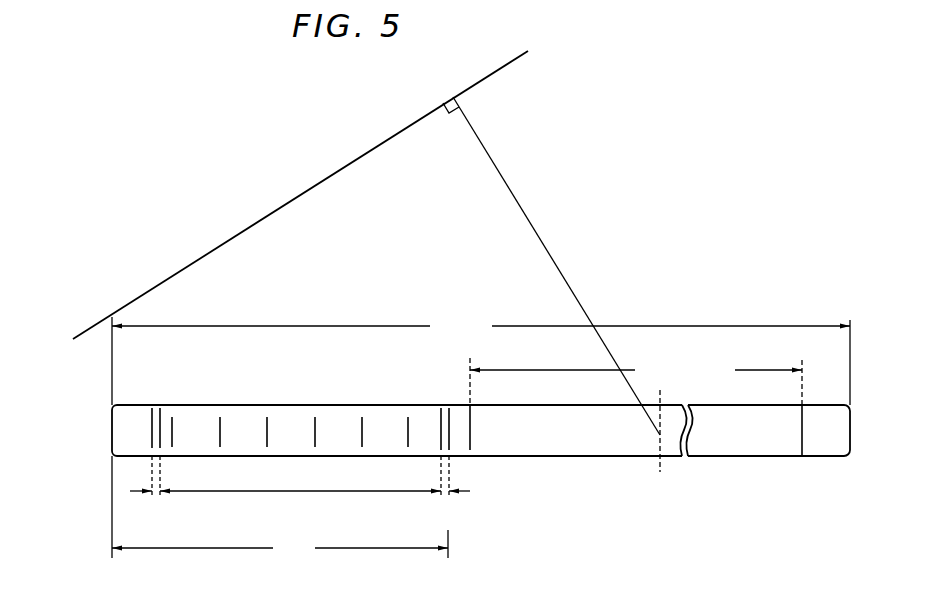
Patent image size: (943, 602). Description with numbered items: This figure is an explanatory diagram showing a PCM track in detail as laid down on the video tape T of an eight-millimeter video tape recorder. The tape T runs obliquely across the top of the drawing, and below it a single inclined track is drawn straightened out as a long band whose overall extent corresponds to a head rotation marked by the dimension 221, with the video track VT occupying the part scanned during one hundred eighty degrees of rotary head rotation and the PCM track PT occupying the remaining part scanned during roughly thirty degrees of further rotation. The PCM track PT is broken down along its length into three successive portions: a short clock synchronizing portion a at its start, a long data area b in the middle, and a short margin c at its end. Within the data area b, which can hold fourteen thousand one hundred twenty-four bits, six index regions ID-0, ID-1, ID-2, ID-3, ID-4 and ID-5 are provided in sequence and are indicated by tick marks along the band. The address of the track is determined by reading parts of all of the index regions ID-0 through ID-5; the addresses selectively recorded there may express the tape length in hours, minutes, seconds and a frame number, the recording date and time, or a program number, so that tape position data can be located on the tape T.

The video tape T is at (355, 190).
The index region ID-0 is at (172, 426).
The index region ID-1 is at (220, 431).
The index region ID-2 is at (267, 426).
The index region ID-3 is at (315, 431).
The index region ID-4 is at (362, 427).
The index region ID-5 is at (408, 432).
The 221 degree wrap angle 221 is at (481, 326).
The video track VT is at (636, 371).
The clock synchronizing portion a is at (146, 507).
The data area b is at (300, 507).
The margin c is at (455, 507).
The PCM track PT is at (280, 549).